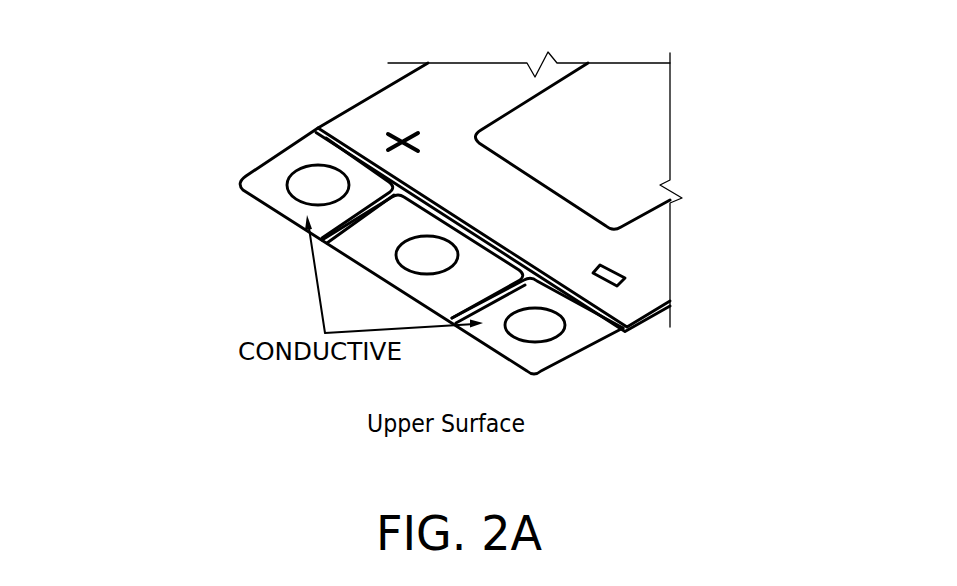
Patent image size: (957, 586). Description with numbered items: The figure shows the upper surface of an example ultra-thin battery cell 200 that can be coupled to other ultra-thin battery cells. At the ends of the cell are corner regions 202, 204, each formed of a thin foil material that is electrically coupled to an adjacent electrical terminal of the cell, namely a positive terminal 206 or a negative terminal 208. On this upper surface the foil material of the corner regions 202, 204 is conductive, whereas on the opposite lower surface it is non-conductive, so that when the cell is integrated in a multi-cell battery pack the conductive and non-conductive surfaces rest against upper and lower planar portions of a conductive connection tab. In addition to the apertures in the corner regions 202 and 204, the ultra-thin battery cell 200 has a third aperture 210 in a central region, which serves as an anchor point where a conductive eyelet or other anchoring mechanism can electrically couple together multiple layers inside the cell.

The ultra-thin battery cell 200 is at (168, 40).
The corner region 202 is at (272, 182).
The corner region 204 is at (563, 353).
The positive terminal 206 is at (365, 153).
The negative terminal 208 is at (598, 293).
The third aperture 210 is at (398, 260).